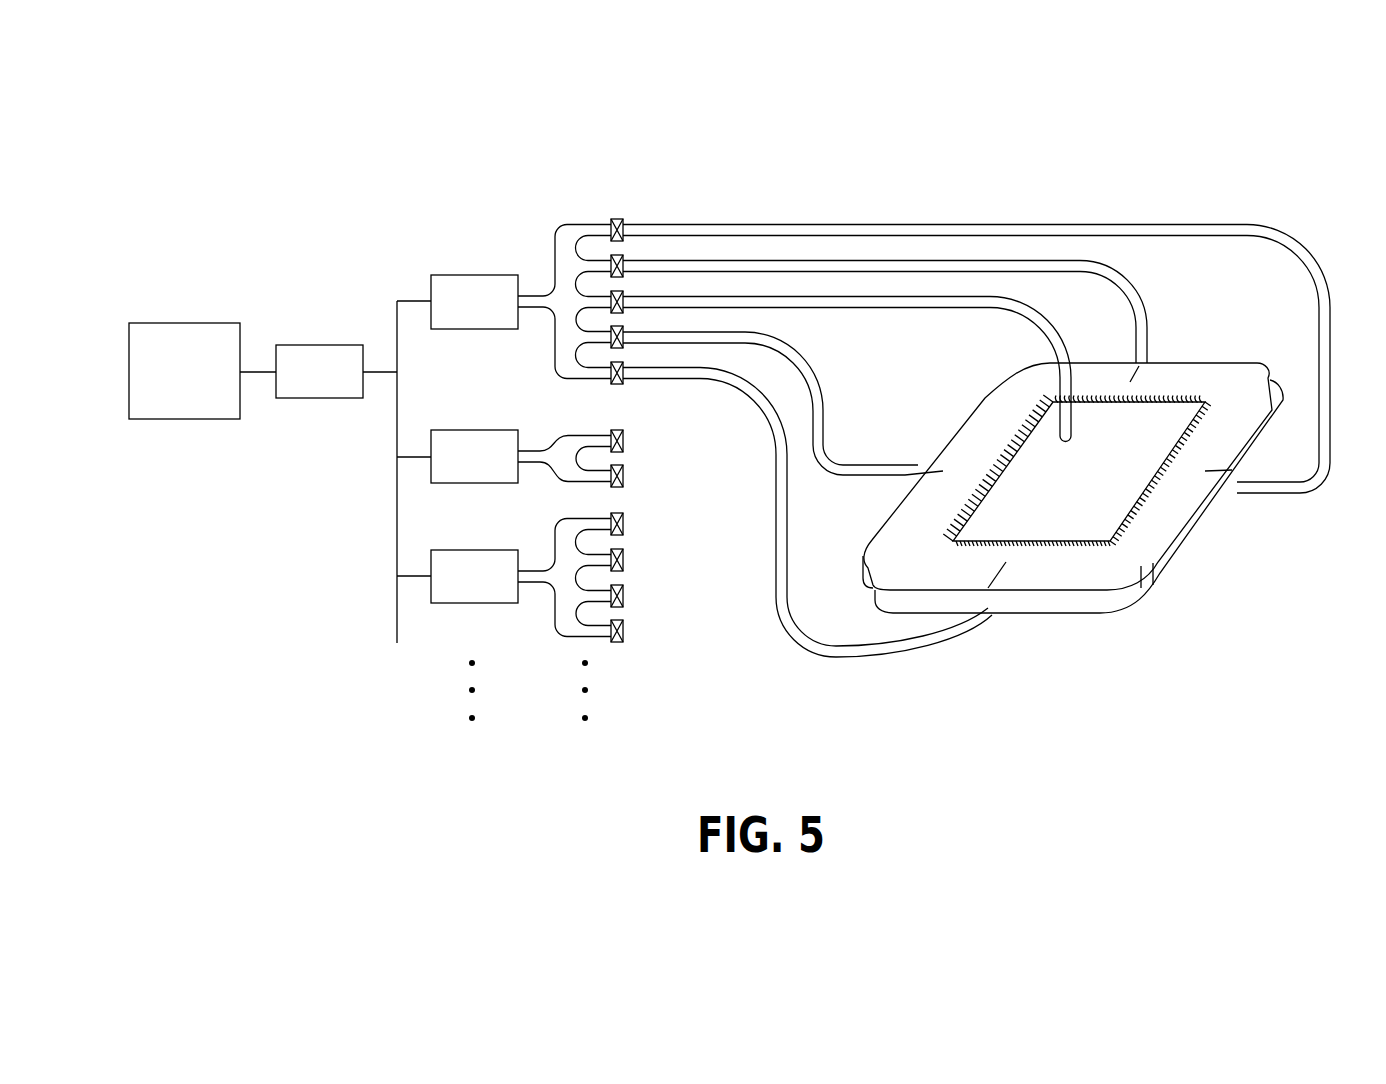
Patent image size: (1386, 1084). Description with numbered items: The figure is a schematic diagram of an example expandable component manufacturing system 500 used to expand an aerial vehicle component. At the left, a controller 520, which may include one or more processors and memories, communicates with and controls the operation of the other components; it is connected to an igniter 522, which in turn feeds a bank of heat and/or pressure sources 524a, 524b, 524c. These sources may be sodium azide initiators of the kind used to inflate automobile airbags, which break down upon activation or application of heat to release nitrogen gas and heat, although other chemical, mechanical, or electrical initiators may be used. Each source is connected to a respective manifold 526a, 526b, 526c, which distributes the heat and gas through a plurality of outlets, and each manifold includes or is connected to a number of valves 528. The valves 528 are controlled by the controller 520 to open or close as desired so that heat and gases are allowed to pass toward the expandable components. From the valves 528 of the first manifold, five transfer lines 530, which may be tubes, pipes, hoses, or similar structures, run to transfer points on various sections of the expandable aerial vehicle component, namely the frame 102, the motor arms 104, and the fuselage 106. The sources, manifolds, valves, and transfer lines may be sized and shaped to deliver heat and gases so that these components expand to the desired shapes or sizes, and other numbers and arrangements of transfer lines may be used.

The expandable component manufacturing system 500 is at (1256, 204).
The controller 520 is at (204, 382).
The igniter 522 is at (339, 382).
The heat and/or pressure source 524a is at (500, 312).
The heat and/or pressure source 524b is at (500, 467).
The heat and/or pressure source 524c is at (500, 587).
The manifold 526a is at (577, 228).
The manifold 526b is at (578, 470).
The manifold 526c is at (578, 630).
The valves 528 is at (615, 257).
The transfer lines 530 is at (779, 445).
The frame 102 is at (1157, 510).
The motor arms 104 is at (1135, 590).
The fuselage 106 is at (1092, 484).